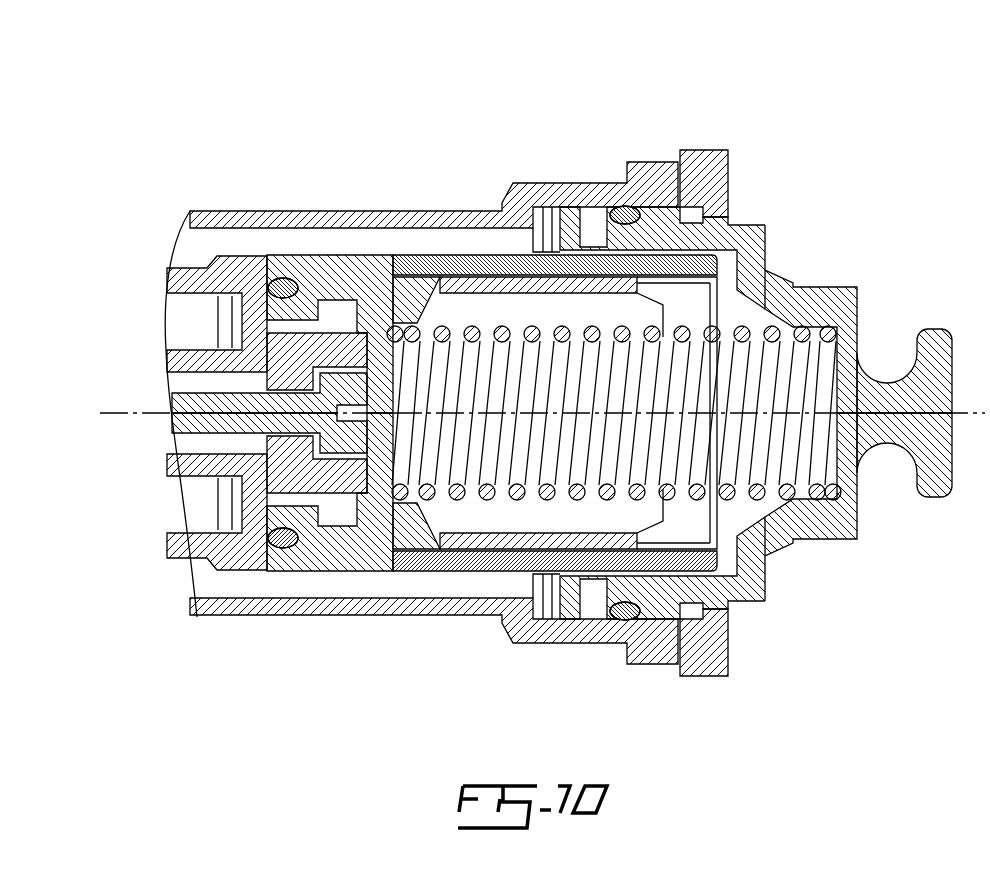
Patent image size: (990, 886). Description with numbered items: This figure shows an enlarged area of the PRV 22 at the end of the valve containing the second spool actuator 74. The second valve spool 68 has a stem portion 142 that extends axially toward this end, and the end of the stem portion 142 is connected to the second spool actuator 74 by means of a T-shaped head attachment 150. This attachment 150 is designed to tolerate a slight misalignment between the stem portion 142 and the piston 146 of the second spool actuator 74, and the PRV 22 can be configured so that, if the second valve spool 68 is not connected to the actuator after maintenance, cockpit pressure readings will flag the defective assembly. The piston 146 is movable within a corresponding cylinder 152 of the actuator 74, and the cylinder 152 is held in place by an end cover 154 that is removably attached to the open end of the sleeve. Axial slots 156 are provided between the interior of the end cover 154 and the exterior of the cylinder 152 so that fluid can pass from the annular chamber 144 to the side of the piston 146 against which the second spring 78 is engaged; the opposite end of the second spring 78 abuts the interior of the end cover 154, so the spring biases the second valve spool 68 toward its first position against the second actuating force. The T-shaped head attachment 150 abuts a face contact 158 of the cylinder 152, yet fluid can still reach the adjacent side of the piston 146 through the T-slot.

The PRV 22 is at (523, 375).
The second valve spool 68 is at (212, 437).
The second spool actuator 74 is at (398, 297).
The second spring 78 is at (760, 505).
The stem portion 142 is at (198, 402).
The annular chamber 144 is at (285, 240).
The piston 146 is at (372, 530).
The T-shaped head attachment 150 is at (342, 443).
The cylinder 152 is at (485, 268).
The end cover 154 is at (820, 303).
The axial slots 156 is at (663, 250).
The face contact 158 is at (285, 547).